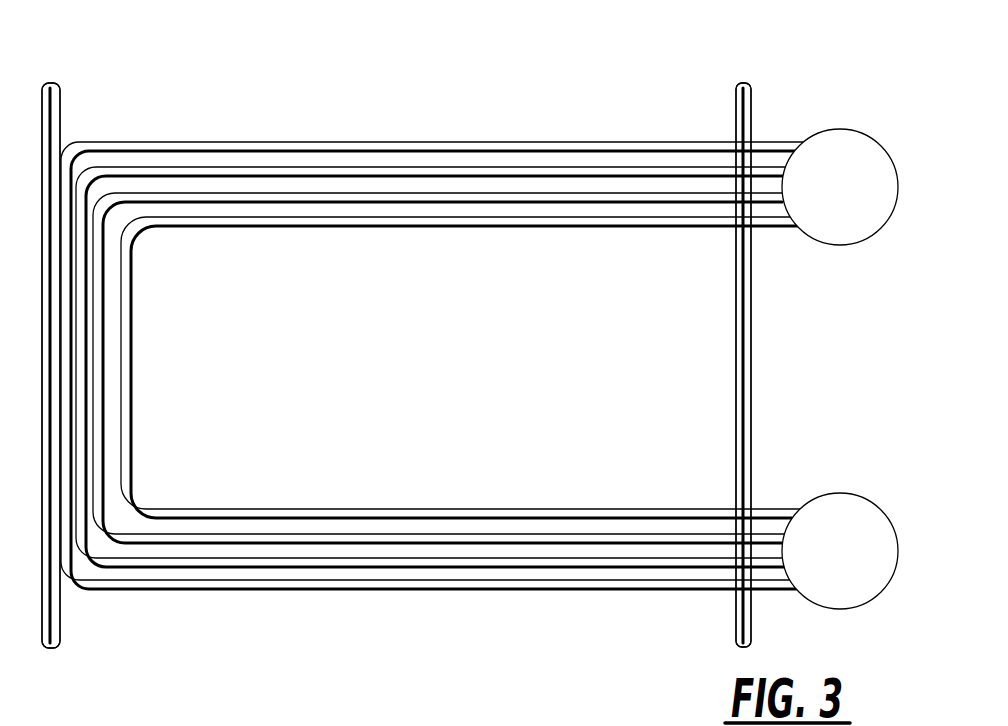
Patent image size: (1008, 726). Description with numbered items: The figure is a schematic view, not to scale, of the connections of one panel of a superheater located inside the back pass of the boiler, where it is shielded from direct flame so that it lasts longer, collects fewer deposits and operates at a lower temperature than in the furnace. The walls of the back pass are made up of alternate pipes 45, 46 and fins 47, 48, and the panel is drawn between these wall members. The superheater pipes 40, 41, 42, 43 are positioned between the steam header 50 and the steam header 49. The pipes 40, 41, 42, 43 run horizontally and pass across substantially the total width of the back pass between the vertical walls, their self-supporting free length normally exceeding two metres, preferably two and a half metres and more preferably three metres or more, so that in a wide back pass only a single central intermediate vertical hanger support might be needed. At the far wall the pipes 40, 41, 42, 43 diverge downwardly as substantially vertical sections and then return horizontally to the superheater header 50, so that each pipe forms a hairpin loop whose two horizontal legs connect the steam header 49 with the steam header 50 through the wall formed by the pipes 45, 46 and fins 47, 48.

The superheater pipe 40 is at (243, 146).
The superheater pipe 41 is at (288, 176).
The superheater pipe 42 is at (322, 202).
The superheater pipe 43 is at (377, 224).
The pipe 45 is at (749, 104).
The pipe 46 is at (59, 95).
The fin 47 is at (748, 354).
The fin 48 is at (57, 620).
The steam header 49 is at (845, 131).
The steam header 50 is at (841, 500).